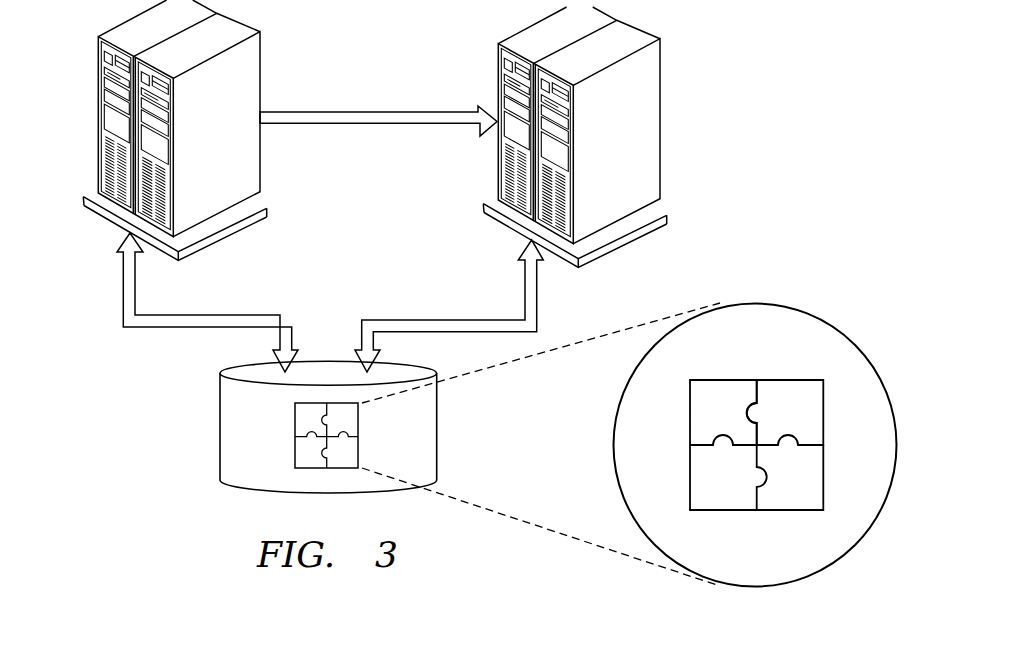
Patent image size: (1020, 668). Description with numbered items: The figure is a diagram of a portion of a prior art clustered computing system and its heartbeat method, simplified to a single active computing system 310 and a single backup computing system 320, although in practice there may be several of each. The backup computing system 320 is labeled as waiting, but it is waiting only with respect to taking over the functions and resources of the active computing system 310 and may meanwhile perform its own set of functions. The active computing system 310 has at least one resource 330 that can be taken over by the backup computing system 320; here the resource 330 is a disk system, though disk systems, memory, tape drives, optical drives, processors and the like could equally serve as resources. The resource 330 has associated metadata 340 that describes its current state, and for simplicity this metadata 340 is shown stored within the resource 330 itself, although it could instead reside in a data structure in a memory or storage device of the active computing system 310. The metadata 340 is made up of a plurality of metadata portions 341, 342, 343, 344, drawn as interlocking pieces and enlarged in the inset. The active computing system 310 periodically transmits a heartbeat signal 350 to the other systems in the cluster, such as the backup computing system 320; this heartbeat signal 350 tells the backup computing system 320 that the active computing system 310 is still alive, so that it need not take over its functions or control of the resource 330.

The active computing system 310 is at (98, 120).
The backup computing system 320 is at (660, 162).
The resource 330 is at (220, 420).
The metadata 340 is at (295, 438).
The metadata portion 341 is at (725, 385).
The metadata portion 342 is at (790, 385).
The metadata portion 343 is at (723, 503).
The metadata portion 344 is at (787, 503).
The heartbeat signal 350 is at (378, 124).